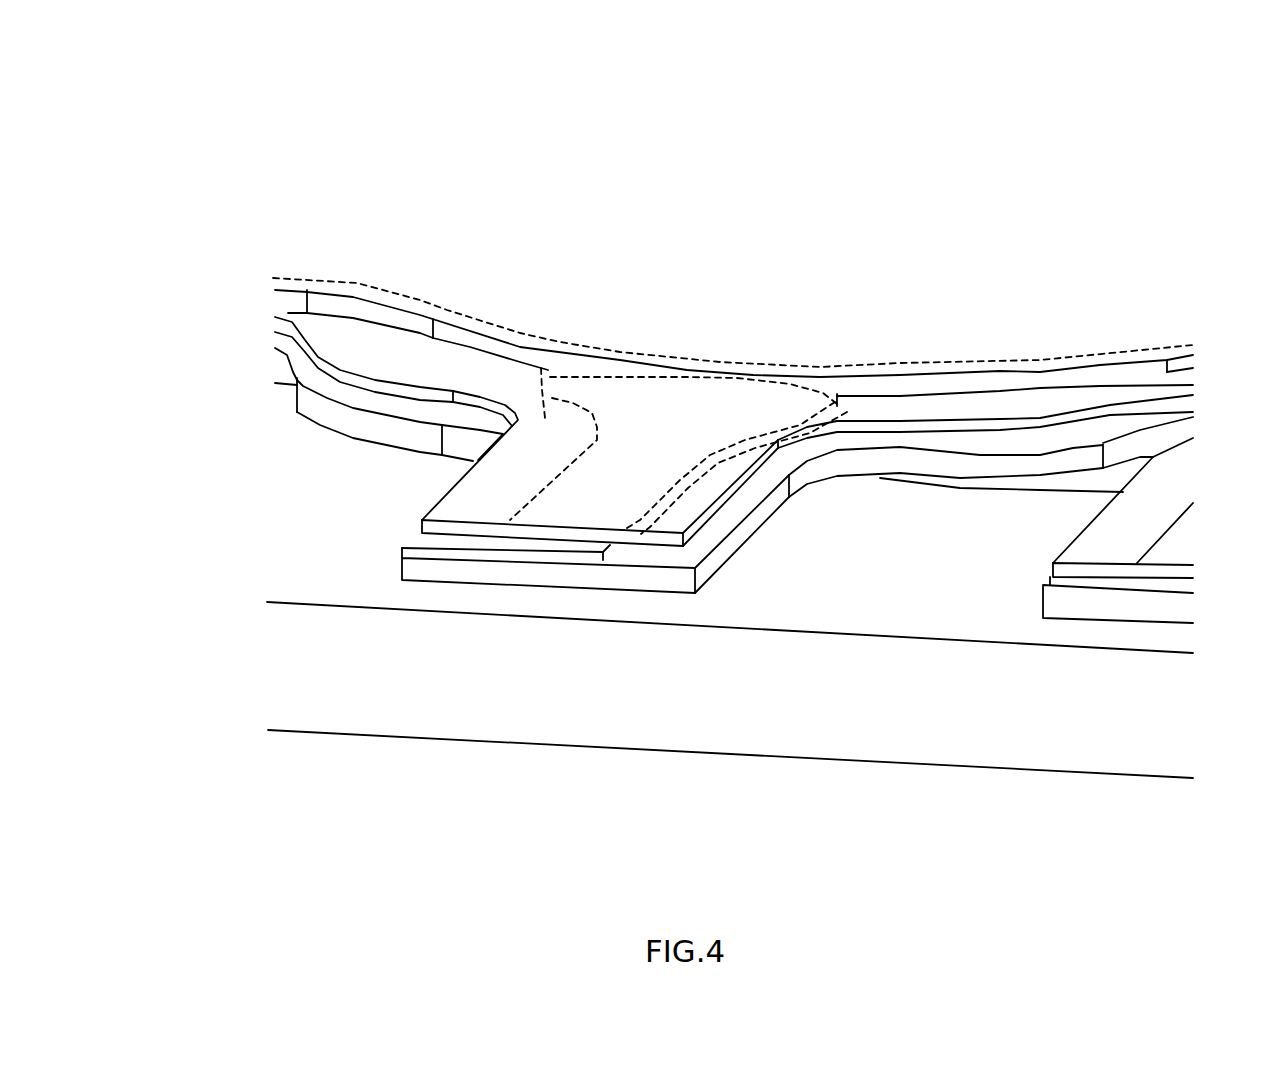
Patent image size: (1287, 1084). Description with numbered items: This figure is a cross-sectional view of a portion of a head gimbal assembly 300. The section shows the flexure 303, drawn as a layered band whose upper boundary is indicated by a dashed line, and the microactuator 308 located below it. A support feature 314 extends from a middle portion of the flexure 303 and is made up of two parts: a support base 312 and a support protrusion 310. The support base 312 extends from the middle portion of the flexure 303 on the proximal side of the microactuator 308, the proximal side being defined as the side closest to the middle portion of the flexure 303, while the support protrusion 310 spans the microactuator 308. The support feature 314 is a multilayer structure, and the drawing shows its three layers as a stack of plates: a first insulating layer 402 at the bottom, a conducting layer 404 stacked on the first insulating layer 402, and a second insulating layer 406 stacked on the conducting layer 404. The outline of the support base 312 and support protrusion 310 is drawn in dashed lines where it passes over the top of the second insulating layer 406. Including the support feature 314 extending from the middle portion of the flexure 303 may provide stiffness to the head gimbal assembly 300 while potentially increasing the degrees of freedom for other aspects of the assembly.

The head gimbal assembly 300 is at (1096, 230).
The flexure 303 is at (355, 278).
The microactuator 308 is at (800, 600).
The support protrusion 310 is at (550, 500).
The support base 312 is at (720, 398).
The support feature 314 is at (785, 132).
The first insulating layer 402 is at (415, 567).
The conducting layer 404 is at (535, 550).
The second insulating layer 406 is at (423, 523).